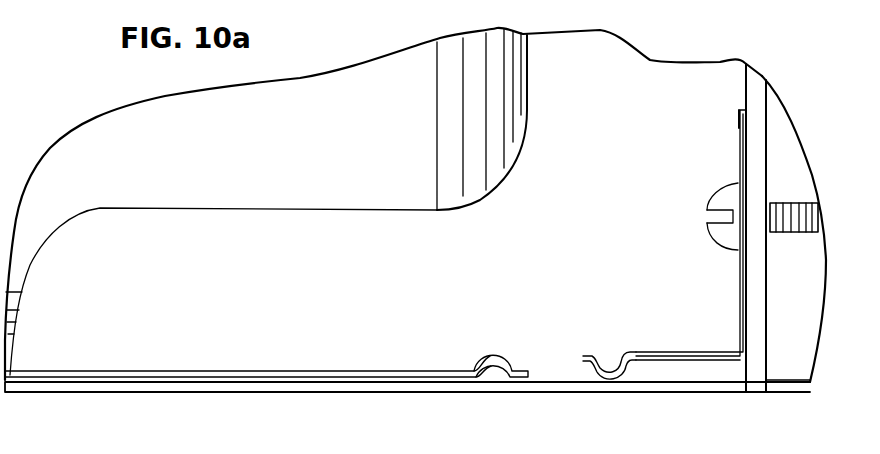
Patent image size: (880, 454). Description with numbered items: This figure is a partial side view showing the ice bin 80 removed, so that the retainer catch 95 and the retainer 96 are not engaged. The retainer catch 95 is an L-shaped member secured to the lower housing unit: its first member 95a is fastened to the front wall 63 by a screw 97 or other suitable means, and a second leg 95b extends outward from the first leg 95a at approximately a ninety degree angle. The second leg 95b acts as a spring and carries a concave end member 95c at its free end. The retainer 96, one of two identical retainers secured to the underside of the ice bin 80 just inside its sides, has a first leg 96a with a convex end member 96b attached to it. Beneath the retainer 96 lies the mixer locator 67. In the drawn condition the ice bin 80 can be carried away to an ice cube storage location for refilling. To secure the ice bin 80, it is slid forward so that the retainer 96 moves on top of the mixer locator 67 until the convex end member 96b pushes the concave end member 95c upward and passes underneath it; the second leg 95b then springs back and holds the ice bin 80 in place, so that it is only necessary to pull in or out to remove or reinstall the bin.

The ice bin 80 is at (336, 196).
The front wall 63 is at (758, 170).
The screw 97 is at (732, 186).
The retainer catch 95 is at (657, 242).
The first member 95a is at (738, 130).
The second leg 95b is at (655, 356).
The concave end member 95c is at (607, 344).
The retainer 96 is at (267, 380).
The first leg 96a is at (141, 375).
The convex end member 96b is at (500, 367).
The mixer locator 67 is at (262, 393).